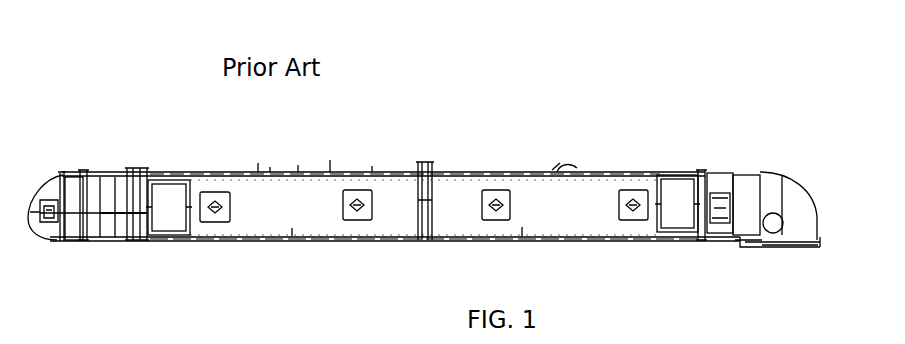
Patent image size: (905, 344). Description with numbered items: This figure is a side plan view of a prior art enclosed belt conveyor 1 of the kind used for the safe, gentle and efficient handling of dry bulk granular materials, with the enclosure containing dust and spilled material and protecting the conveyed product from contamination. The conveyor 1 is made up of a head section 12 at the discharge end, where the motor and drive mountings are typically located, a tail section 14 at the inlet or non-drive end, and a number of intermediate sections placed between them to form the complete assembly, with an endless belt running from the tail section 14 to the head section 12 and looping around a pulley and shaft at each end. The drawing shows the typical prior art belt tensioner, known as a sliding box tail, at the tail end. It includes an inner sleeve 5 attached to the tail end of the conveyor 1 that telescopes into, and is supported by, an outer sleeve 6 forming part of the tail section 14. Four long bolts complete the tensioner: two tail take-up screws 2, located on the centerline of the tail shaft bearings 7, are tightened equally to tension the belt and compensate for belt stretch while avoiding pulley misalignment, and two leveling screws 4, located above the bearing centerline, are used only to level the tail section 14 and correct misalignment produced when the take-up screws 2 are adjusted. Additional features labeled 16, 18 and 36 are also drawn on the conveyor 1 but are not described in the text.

The enclosed belt conveyor 1 is at (557, 132).
The tail take-up screws 2 is at (117, 240).
The leveling screws 4 is at (90, 240).
The inner sleeve 5 is at (95, 172).
The outer sleeve 6 is at (200, 240).
The tail shaft bearings 7 is at (27, 243).
The head section 12 is at (787, 172).
The tail section 14 is at (80, 174).
The access panel 16 is at (647, 172).
The access panel 18 is at (180, 172).
The shaft 36 is at (100, 243).